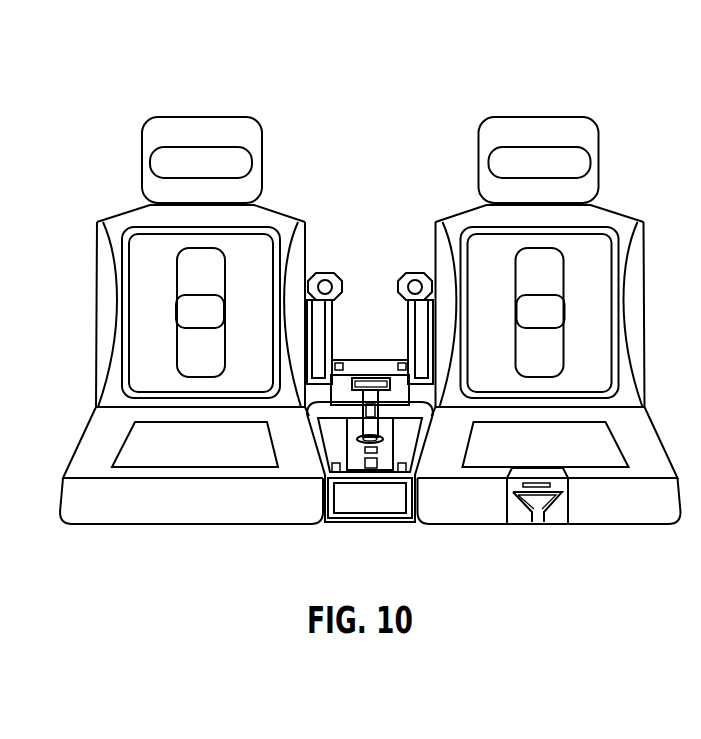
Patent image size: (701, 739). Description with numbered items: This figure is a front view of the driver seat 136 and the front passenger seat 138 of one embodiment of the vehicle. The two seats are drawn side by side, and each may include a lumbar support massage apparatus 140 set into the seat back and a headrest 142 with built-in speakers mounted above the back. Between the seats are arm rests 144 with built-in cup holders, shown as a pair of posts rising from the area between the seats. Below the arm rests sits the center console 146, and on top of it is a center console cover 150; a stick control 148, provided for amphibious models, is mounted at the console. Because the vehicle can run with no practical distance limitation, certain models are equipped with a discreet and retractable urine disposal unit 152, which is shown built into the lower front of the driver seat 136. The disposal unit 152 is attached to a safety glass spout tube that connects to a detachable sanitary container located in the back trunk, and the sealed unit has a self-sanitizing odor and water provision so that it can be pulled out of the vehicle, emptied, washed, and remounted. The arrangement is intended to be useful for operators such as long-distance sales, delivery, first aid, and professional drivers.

The driver seat 136 is at (549, 349).
The front passenger seat 138 is at (191, 318).
The lumbar support massage apparatus 140 is at (213, 258).
The headrest 142 is at (208, 117).
The arm rests 144 is at (414, 273).
The center console 146 is at (367, 502).
The stick control 148 is at (380, 385).
The center console cover 150 is at (352, 365).
The urine disposal unit 152 is at (518, 513).